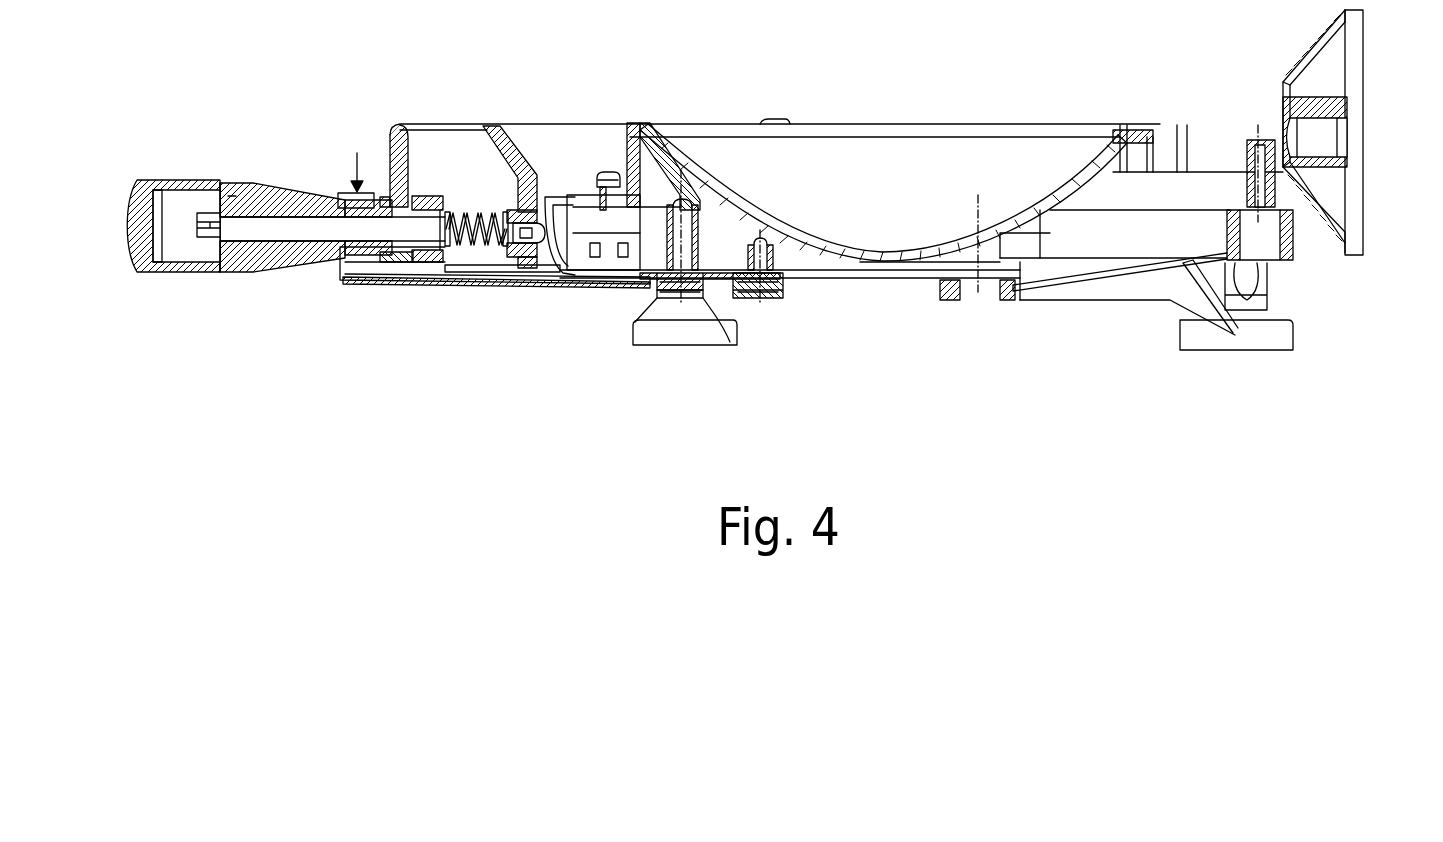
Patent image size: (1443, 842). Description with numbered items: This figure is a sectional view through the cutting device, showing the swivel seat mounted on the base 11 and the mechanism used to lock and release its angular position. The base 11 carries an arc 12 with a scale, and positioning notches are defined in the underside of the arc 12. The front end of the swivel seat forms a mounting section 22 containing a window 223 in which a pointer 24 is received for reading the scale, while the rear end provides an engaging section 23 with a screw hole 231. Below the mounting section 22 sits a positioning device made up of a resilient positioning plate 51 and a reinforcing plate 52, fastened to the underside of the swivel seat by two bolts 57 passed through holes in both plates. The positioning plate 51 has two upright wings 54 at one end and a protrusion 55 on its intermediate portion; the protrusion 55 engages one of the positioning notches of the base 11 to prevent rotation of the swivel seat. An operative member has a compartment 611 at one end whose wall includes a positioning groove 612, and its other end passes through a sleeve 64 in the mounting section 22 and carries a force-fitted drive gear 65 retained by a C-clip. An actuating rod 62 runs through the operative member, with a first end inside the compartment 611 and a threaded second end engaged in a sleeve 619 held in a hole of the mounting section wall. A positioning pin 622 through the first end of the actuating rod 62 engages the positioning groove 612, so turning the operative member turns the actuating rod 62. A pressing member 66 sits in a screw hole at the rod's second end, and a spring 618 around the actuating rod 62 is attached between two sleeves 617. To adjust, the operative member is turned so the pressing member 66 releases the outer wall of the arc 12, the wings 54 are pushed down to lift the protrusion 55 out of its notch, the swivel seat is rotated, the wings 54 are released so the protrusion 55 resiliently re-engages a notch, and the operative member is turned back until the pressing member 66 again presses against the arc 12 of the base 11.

The base 11 is at (1165, 292).
The arc 12 is at (578, 220).
The mounting section 22 is at (464, 143).
The engaging section 23 is at (1313, 52).
The pointer 24 is at (597, 178).
The resilient positioning plate 51 is at (452, 284).
The reinforcing plate 52 is at (702, 292).
The wings 54 is at (350, 200).
The protrusion 55 is at (568, 264).
The bolts 57 is at (765, 292).
The actuating rod 62 is at (282, 228).
The sleeve 64 is at (372, 262).
The drive gear 65 is at (417, 262).
The pressing member 66 is at (553, 262).
The window 223 is at (519, 137).
The screw hole 231 is at (1322, 133).
The compartment 611 is at (188, 252).
The positioning groove 612 is at (232, 196).
The sleeves 617 is at (445, 212).
The spring 618 is at (484, 245).
The sleeve 619 is at (538, 248).
The positioning pin 622 is at (226, 222).